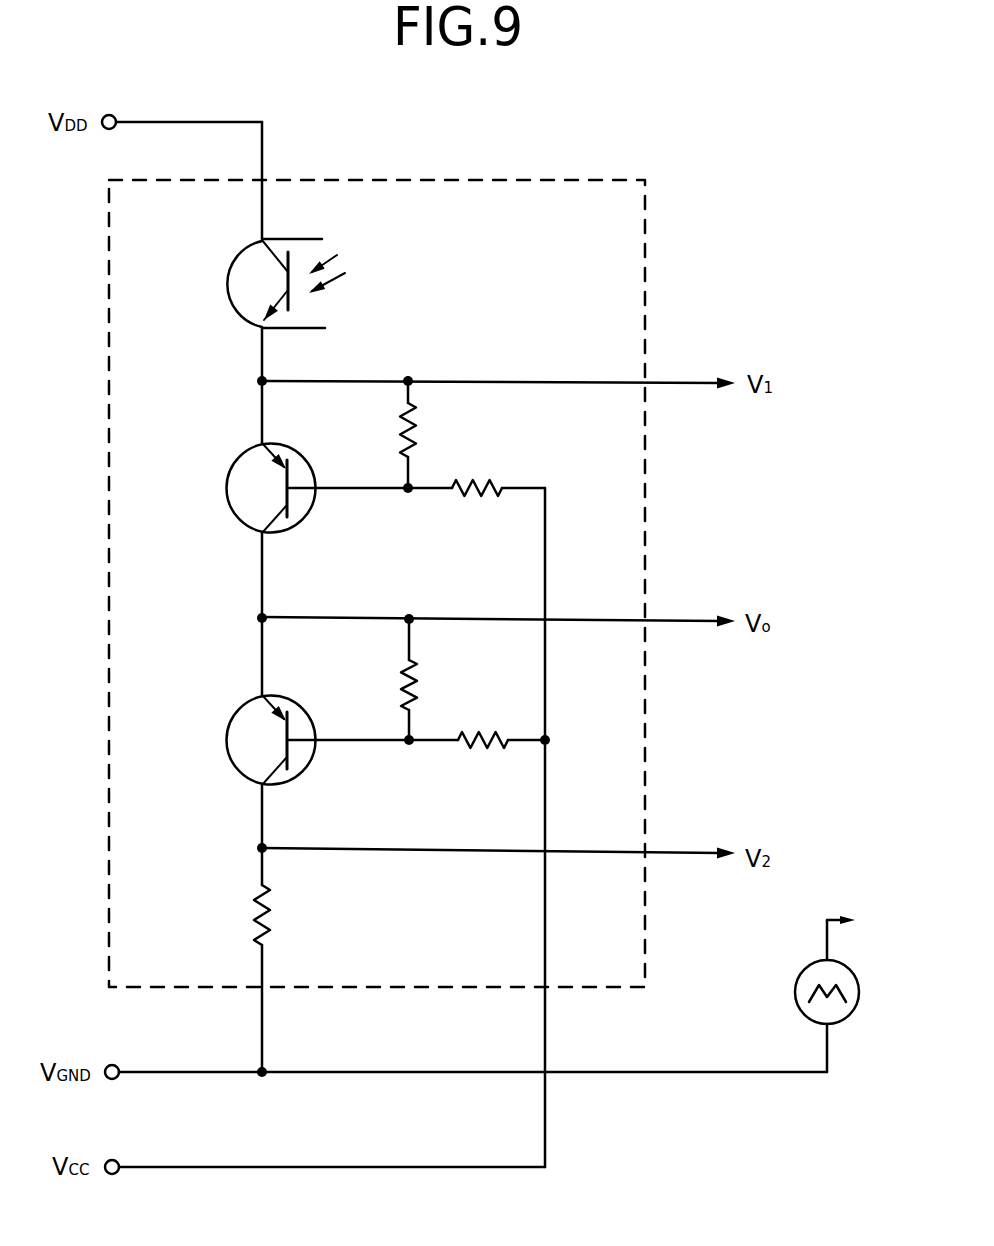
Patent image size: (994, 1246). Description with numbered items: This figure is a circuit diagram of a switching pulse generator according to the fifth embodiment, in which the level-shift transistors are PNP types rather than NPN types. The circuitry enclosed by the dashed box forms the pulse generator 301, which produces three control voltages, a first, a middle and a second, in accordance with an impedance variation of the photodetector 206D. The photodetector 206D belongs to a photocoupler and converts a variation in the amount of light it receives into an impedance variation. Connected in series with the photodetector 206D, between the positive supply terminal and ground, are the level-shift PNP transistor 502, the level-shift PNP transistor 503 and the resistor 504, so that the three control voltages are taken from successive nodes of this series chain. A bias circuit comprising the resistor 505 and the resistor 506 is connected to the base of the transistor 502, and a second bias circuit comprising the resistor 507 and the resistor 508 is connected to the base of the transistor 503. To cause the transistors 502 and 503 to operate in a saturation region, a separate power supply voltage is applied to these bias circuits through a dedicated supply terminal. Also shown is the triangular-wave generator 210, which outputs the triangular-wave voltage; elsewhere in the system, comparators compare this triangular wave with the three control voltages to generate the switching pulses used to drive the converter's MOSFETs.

The pulse generator 301 is at (645, 181).
The photodetector 206D is at (235, 258).
The level-shift PNP transistor 502 is at (245, 452).
The level-shift PNP transistor 503 is at (229, 718).
The resistor 504 is at (256, 905).
The resistor 505 is at (491, 483).
The resistor 506 is at (418, 444).
The resistor 507 is at (487, 732).
The resistor 508 is at (417, 678).
The triangular-wave generator 210 is at (796, 972).